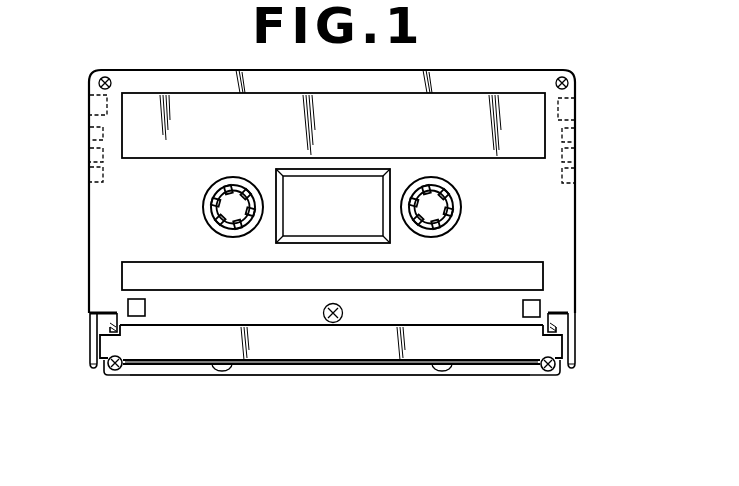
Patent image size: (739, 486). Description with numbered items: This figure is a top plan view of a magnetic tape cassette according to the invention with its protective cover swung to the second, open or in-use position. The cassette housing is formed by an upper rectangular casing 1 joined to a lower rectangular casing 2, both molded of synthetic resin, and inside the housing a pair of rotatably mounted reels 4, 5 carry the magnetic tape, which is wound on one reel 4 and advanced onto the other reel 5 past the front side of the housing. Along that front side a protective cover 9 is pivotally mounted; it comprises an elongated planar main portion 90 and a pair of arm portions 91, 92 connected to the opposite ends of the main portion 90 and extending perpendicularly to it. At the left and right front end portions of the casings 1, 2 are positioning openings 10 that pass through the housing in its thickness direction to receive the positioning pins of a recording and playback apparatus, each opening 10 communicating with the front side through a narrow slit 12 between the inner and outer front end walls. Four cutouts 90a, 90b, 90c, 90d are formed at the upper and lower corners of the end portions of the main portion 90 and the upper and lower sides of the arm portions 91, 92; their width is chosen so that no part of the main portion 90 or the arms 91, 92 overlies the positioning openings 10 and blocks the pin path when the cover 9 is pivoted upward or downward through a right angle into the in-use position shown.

The upper rectangular casing 1 is at (100, 221).
The lower rectangular casing 2 is at (97, 338).
The reel 4 is at (203, 206).
The reel 5 is at (461, 206).
The protective cover 9 is at (366, 366).
The positioning openings 10 is at (96, 322).
The slit 12 is at (100, 364).
The main portion 90 is at (472, 358).
The cutout 90a is at (112, 329).
The cutout 90b is at (107, 370).
The cutout 90c is at (558, 329).
The cutout 90d is at (561, 367).
The arm portion 91 is at (93, 350).
The arm portion 92 is at (577, 347).